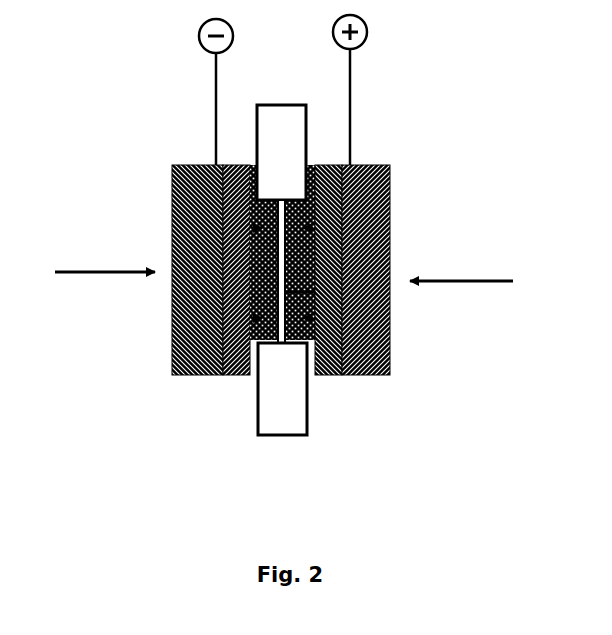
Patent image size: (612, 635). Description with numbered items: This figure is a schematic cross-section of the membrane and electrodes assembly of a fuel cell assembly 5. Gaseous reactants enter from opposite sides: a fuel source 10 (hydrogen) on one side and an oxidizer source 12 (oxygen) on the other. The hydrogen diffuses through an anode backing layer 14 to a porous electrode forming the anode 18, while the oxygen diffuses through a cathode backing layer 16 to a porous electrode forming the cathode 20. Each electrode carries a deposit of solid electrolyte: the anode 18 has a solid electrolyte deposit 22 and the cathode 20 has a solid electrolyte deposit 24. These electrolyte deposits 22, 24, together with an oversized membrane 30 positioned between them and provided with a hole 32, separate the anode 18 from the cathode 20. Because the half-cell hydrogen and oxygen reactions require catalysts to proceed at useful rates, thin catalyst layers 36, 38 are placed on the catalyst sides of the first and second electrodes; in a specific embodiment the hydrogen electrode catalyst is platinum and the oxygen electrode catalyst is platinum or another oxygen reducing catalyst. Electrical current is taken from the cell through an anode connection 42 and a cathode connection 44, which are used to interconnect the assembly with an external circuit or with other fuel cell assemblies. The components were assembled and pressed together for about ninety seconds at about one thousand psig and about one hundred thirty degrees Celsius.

The fuel cell assembly 5 is at (85, 80).
The fuel source 10 is at (107, 270).
The oxidizer source 12 is at (462, 270).
The anode backing layer 14 is at (172, 330).
The cathode backing layer 16 is at (390, 330).
The anode 18 is at (238, 375).
The cathode 20 is at (330, 375).
The solid electrolyte deposit 22 is at (172, 167).
The solid electrolyte deposit 24 is at (390, 195).
The oversized membrane 30 is at (287, 435).
The hole 32 is at (390, 298).
The catalyst layer 36 is at (172, 318).
The catalyst layer 38 is at (390, 318).
The anode connection 42 is at (216, 90).
The cathode connection 44 is at (350, 90).